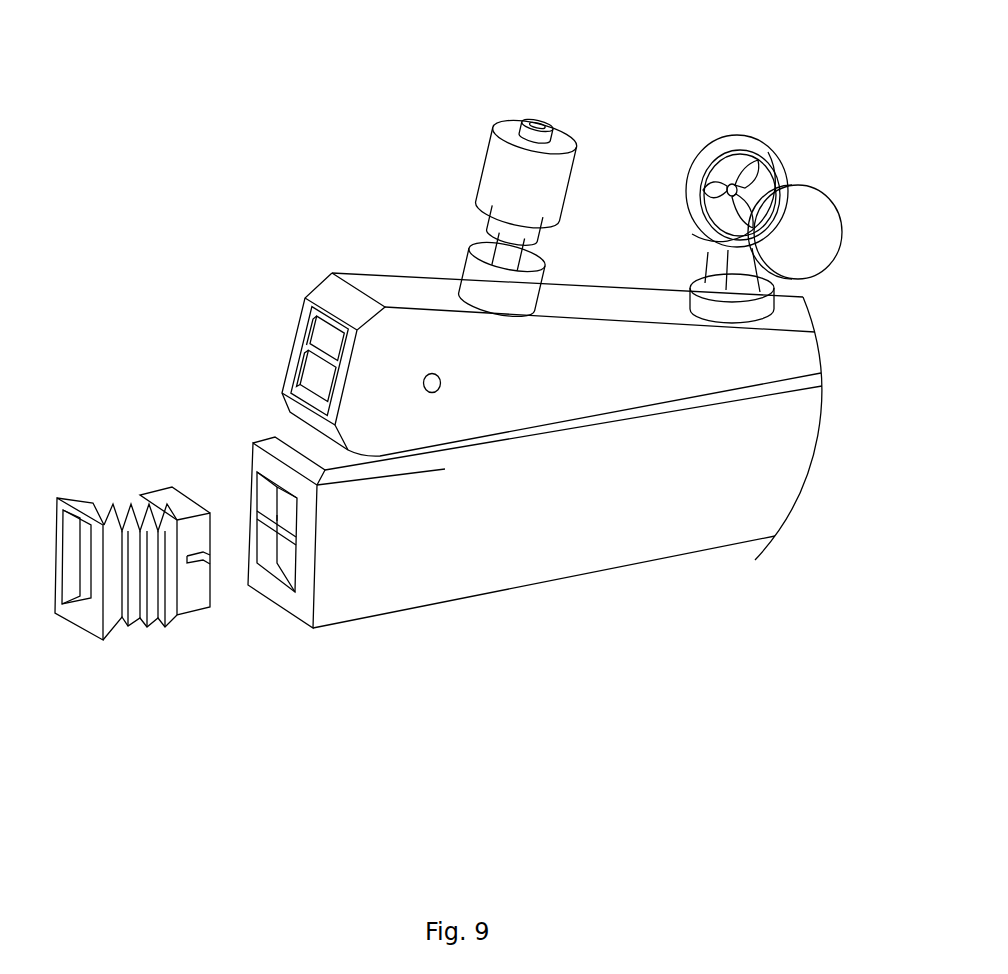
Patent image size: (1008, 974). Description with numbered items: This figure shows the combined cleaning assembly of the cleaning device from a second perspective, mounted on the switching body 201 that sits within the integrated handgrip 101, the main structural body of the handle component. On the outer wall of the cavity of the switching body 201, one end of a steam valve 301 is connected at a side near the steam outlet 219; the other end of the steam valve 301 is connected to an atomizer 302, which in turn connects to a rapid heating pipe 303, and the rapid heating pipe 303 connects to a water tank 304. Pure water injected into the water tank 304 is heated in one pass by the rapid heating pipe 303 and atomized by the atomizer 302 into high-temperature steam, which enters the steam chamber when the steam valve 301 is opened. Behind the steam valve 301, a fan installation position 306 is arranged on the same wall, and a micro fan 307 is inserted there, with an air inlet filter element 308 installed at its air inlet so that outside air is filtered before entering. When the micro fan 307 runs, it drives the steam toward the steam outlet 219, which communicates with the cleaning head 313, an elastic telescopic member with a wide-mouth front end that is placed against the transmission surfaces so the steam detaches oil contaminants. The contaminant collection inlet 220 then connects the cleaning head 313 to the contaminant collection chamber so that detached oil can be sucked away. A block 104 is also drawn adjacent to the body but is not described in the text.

The integrated handgrip 101 is at (515, 545).
The switching body 201 is at (387, 417).
The steam outlet 219 is at (320, 327).
The contaminant collection inlet 220 is at (320, 387).
The connecting block 104 is at (277, 572).
The cleaning head 313 is at (168, 498).
The steam valve 301 is at (475, 277).
The atomizer 302 is at (493, 243).
The rapid heating pipe 303 is at (490, 215).
The water tank 304 is at (493, 167).
The fan installation position 306 is at (702, 303).
The micro fan 307 is at (717, 132).
The air inlet filter element 308 is at (798, 200).